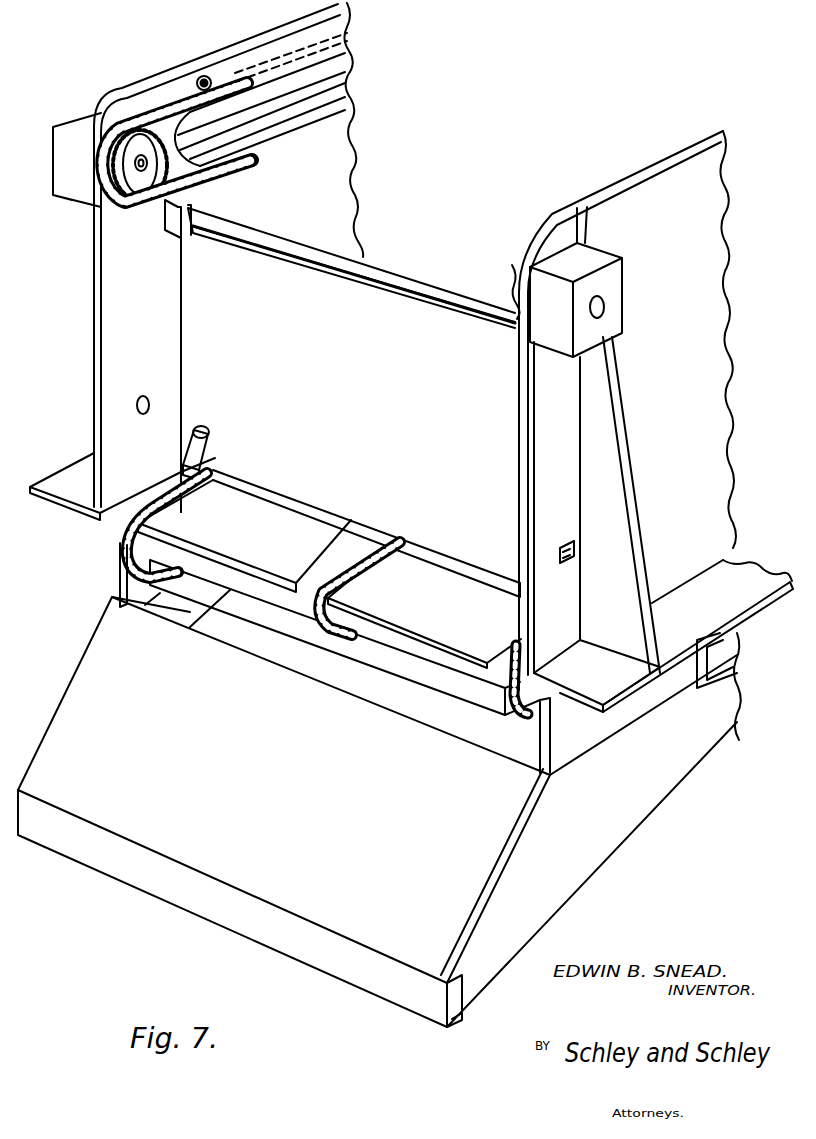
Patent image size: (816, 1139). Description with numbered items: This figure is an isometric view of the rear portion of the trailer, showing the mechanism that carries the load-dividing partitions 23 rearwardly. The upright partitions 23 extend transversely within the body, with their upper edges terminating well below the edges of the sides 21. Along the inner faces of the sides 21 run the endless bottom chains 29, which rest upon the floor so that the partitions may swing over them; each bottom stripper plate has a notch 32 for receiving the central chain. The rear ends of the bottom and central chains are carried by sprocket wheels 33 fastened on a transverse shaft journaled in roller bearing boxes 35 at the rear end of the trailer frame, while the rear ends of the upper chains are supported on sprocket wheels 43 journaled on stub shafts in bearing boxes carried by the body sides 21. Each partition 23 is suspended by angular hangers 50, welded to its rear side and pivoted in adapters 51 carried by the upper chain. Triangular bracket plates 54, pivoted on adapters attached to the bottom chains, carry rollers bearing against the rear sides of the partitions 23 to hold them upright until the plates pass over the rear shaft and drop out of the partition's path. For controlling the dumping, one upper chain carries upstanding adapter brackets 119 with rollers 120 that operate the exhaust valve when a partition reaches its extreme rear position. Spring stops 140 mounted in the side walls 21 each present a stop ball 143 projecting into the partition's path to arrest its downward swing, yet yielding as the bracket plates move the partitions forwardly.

The sides 21 is at (724, 386).
The partitions 23 is at (400, 300).
The bottom chains 29 is at (517, 704).
The notch 32 is at (404, 540).
The sprocket wheels 33 is at (118, 578).
The roller bearing boxes 35 is at (442, 660).
The sprocket wheels 43 is at (152, 208).
The angular hangers 50 is at (178, 235).
The adapters 51 is at (225, 190).
The triangular bracket plates 54 is at (210, 445).
The adapter brackets 119 is at (213, 83).
The rollers 120 is at (201, 77).
The spring stops 140 is at (575, 545).
The stop ball 143 is at (143, 414).